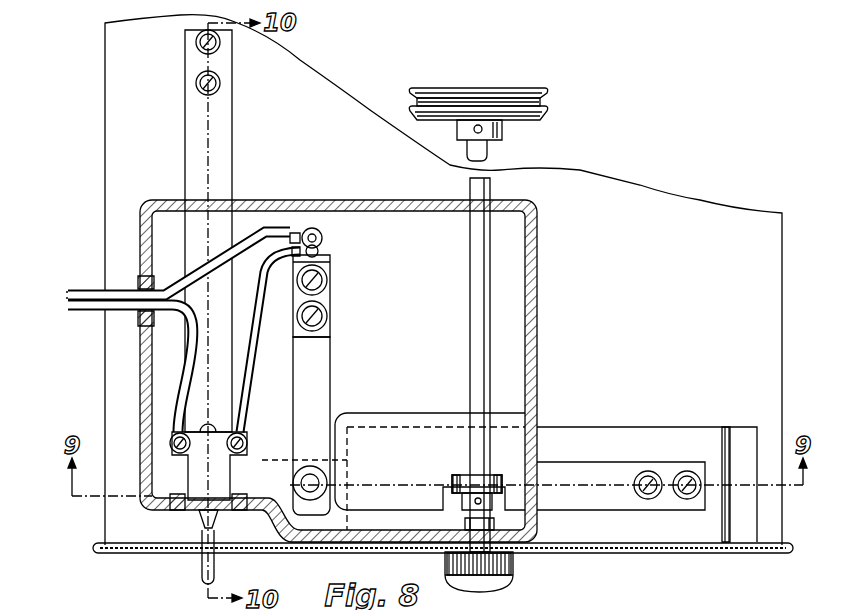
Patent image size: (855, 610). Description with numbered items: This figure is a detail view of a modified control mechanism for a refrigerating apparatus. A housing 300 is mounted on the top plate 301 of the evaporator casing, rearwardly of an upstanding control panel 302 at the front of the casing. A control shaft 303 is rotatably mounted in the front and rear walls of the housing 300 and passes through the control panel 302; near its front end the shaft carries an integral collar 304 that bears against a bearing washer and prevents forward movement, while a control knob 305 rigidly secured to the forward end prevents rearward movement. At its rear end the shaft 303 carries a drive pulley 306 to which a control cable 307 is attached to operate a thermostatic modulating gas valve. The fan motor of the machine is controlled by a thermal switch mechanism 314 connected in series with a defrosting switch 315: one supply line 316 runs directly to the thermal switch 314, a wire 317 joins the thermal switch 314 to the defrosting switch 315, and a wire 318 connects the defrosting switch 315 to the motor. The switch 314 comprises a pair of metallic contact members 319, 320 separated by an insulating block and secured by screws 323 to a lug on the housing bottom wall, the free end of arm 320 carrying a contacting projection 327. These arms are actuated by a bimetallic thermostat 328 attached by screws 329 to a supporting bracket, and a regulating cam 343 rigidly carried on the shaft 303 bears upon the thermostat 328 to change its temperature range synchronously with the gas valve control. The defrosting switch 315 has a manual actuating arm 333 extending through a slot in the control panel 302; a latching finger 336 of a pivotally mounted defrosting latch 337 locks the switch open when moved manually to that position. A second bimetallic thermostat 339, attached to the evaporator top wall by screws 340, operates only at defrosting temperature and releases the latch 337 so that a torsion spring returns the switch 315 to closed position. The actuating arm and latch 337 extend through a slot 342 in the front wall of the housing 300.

The housing 300 is at (326, 200).
The top plate 301 is at (636, 243).
The control panel 302 is at (572, 554).
The control shaft 303 is at (470, 320).
The collar 304 is at (464, 525).
The control knob 305 is at (513, 566).
The drive pulley 306 is at (508, 89).
The control cable 307 is at (548, 112).
The switch mechanism 314 is at (333, 329).
The defrosting switch 315 is at (205, 471).
The supply line 316 is at (108, 292).
The wire 317 is at (250, 406).
The wire 318 is at (108, 308).
The contact member 319 is at (320, 236).
The contact member 320 is at (330, 376).
The screws 323 is at (326, 313).
The projection 327 is at (304, 477).
The bimetallic thermostat 328 is at (583, 503).
The screws 329 is at (687, 476).
The manual actuating arm 333 is at (203, 573).
The latching finger 336 is at (206, 523).
The defrosting latch 337 is at (188, 506).
The bimetallic thermostat 339 is at (233, 158).
The screws 340 is at (200, 78).
The slot 342 is at (235, 512).
The regulating cam 343 is at (458, 482).